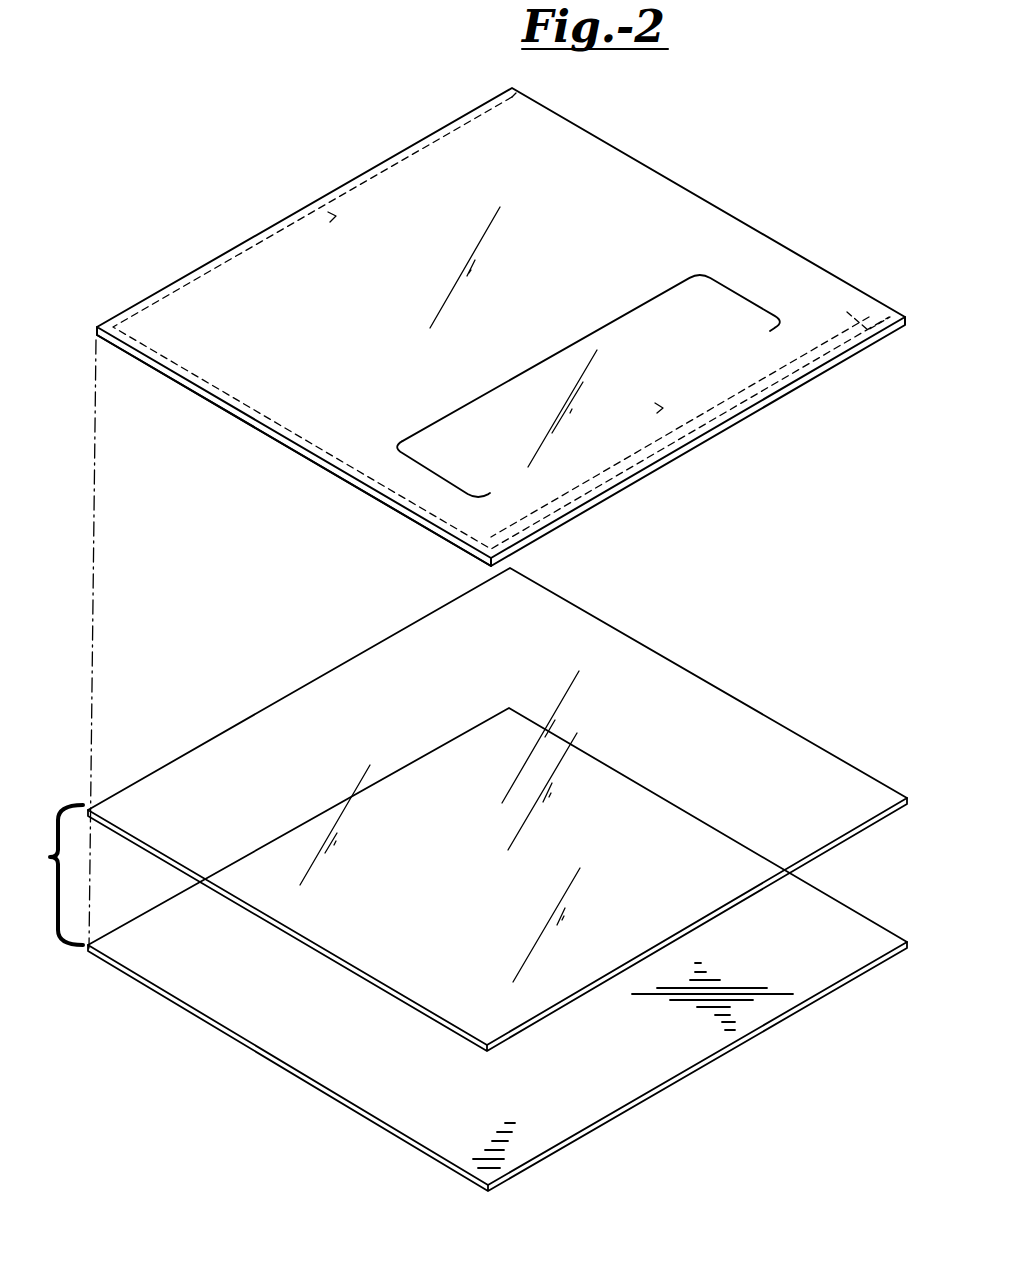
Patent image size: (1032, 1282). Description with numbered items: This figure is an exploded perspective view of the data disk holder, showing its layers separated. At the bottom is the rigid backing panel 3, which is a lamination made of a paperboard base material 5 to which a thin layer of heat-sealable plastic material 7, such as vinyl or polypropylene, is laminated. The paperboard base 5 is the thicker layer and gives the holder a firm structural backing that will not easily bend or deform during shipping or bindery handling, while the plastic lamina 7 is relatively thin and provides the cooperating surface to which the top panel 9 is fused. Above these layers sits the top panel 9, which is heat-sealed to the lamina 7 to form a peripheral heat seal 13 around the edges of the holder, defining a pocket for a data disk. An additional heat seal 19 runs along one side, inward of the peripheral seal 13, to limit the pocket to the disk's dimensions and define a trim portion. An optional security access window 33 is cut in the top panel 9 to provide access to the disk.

The backing panel 3 is at (50, 857).
The paperboard base material 5 is at (182, 915).
The heat-sealable plastic material 7 is at (268, 722).
The top panel 9 is at (205, 290).
The heat seal 13 is at (256, 434).
The additional heat seal 19 is at (700, 398).
The security access window 33 is at (607, 322).